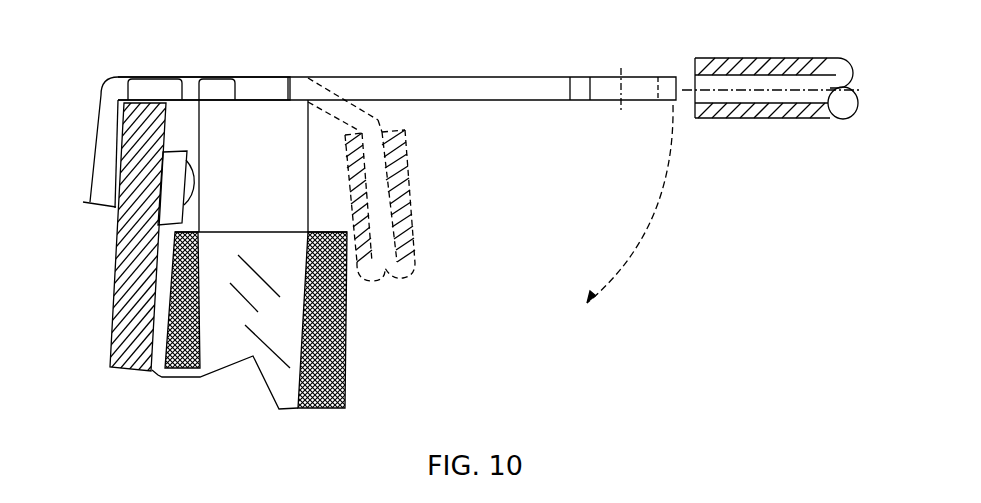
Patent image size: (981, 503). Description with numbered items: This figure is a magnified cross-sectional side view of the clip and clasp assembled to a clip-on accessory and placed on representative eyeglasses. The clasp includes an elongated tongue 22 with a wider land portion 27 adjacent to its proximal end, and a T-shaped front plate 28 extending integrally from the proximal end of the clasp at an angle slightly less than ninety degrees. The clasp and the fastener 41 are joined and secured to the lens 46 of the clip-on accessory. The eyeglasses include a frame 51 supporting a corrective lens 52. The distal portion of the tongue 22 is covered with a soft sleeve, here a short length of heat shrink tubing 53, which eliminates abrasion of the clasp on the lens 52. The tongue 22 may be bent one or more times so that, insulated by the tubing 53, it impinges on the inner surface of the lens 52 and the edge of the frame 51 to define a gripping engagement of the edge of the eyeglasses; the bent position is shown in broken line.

The tongue 22 is at (338, 95).
The land portion 27 is at (268, 77).
The T-shaped front plate 28 is at (97, 128).
The fastener 41 is at (181, 150).
The lens 46 is at (133, 353).
The frame 51 is at (237, 345).
The corrective lens 52 is at (347, 350).
The heat shrink tubing 53 is at (747, 118).